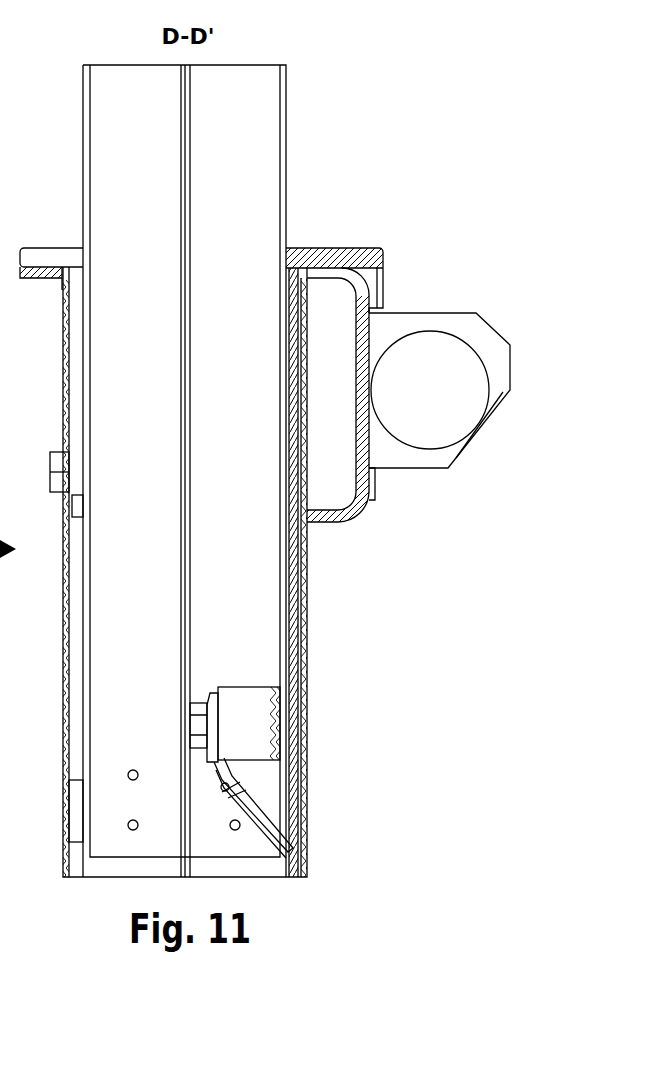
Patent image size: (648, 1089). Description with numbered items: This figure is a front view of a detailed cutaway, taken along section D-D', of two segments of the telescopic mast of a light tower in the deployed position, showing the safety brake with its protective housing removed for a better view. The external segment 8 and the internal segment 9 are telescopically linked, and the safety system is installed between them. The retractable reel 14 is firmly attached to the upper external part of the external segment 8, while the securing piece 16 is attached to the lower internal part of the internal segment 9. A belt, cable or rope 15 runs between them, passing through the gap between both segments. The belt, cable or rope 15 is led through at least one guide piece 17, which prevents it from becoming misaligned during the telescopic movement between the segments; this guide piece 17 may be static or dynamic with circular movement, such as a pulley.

The external segment 8 is at (314, 565).
The internal segment 9 is at (296, 165).
The retractable reel 14 is at (477, 302).
The belt, cable or rope 15 is at (394, 288).
The securing piece 16 is at (232, 770).
The guide piece 17 is at (378, 238).